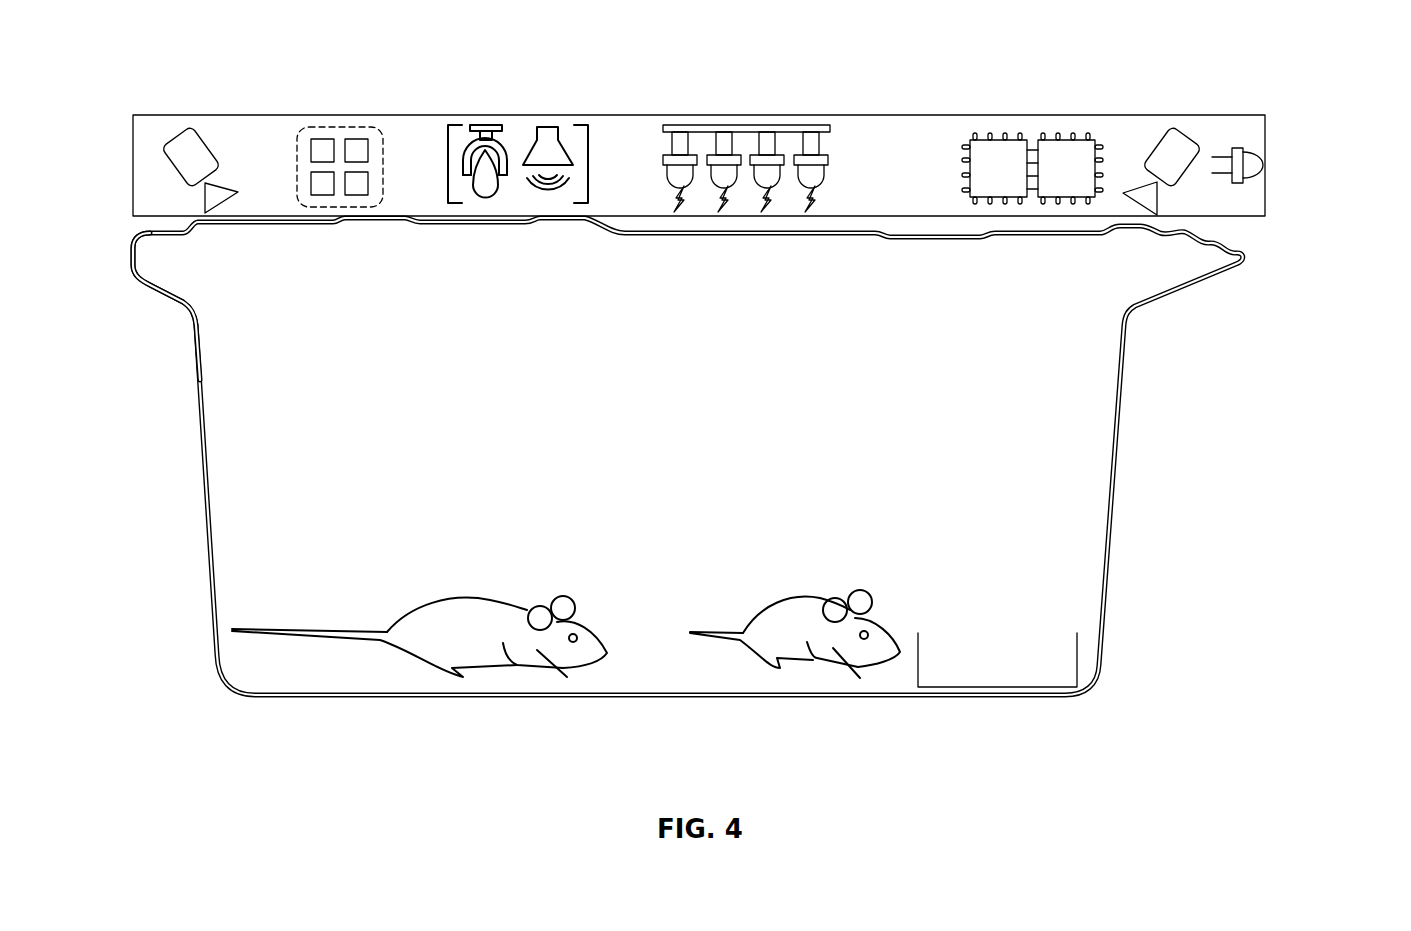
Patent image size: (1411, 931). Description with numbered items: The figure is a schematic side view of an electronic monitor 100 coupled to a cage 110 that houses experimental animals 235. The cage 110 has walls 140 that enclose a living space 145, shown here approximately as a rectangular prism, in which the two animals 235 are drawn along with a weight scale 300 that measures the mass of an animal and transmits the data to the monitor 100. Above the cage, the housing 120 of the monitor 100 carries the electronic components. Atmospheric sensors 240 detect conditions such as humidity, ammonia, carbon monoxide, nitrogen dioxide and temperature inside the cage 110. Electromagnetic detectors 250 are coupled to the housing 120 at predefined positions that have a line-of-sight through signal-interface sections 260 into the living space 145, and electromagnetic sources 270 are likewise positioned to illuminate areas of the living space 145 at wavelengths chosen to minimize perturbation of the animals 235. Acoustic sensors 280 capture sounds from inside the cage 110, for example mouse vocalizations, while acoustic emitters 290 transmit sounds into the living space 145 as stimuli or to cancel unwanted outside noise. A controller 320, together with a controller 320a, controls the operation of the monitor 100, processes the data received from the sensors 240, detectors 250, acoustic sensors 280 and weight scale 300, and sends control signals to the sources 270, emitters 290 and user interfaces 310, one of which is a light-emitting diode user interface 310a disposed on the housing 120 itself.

The electronic monitor 100 is at (1268, 190).
The cage 110 is at (1122, 405).
The housing 120 is at (1240, 115).
The walls 140 is at (190, 225).
The living space 145 is at (1055, 538).
The experimental animals 235 is at (520, 667).
The atmospheric sensors 240 is at (362, 127).
The electromagnetic detectors 250 is at (200, 127).
The signal-interface sections 260 is at (288, 250).
The electromagnetic sources 270 is at (668, 125).
The acoustic sensors 280 is at (484, 125).
The acoustic emitters 290 is at (548, 127).
The weight scale 300 is at (1077, 652).
The user interfaces 310 is at (1282, 162).
The user interface 310a is at (1255, 148).
The controller 320 is at (1015, 95).
The controller 320a is at (1082, 140).